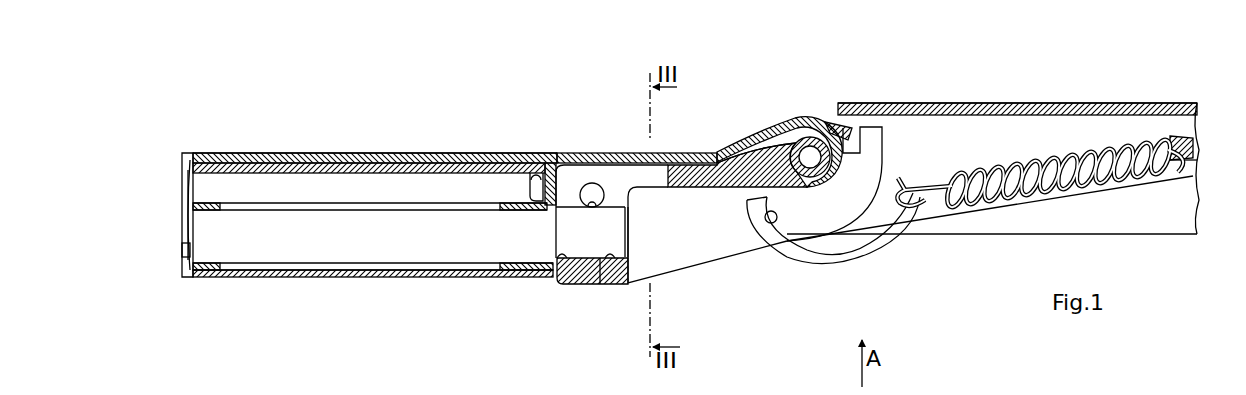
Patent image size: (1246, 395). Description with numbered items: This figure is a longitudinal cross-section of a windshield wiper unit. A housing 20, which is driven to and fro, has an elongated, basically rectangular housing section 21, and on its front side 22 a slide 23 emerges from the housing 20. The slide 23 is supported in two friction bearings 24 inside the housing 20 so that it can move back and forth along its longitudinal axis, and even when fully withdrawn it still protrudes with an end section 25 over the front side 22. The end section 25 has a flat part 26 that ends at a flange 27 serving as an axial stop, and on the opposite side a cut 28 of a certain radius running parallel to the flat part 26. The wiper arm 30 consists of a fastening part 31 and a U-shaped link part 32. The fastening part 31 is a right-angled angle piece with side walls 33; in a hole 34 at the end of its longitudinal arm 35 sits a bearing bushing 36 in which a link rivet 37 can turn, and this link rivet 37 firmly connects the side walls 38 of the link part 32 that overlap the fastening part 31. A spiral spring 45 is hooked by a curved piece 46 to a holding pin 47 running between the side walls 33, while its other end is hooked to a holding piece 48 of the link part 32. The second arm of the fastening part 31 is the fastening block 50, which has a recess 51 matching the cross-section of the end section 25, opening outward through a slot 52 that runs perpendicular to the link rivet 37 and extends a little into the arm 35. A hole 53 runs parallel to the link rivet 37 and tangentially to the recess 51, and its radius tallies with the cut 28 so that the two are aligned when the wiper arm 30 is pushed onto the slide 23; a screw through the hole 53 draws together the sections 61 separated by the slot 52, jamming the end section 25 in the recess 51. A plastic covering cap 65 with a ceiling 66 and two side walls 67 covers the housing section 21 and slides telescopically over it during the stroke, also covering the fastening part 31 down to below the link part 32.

The housing 20 is at (230, 280).
The housing section 21 is at (273, 170).
The front side 22 is at (527, 178).
The slide 23 is at (433, 250).
The friction bearings 24 is at (205, 203).
The end section 25 is at (615, 232).
The flat part 26 is at (598, 280).
The flange 27 is at (562, 285).
The cut 28 is at (582, 208).
The wiper arm 30 is at (977, 97).
The fastening part 31 is at (737, 252).
The link part 32 is at (1092, 105).
The side walls 33 is at (698, 250).
The hole 34 is at (797, 123).
The arm 35 is at (773, 153).
The bearing bushing 36 is at (812, 123).
The link rivet 37 is at (808, 160).
The side walls 38 is at (930, 212).
The spiral spring 45 is at (1005, 197).
The curved piece 46 is at (862, 252).
The holding pin 47 is at (772, 224).
The holding piece 48 is at (1190, 143).
The fastening block 50 is at (578, 280).
The recess 51 is at (618, 284).
The slot 52 is at (653, 172).
The hole 53 is at (598, 190).
The sections 61 is at (587, 163).
The covering cap 65 is at (378, 150).
The ceiling 66 is at (332, 162).
The side walls 67 is at (190, 212).